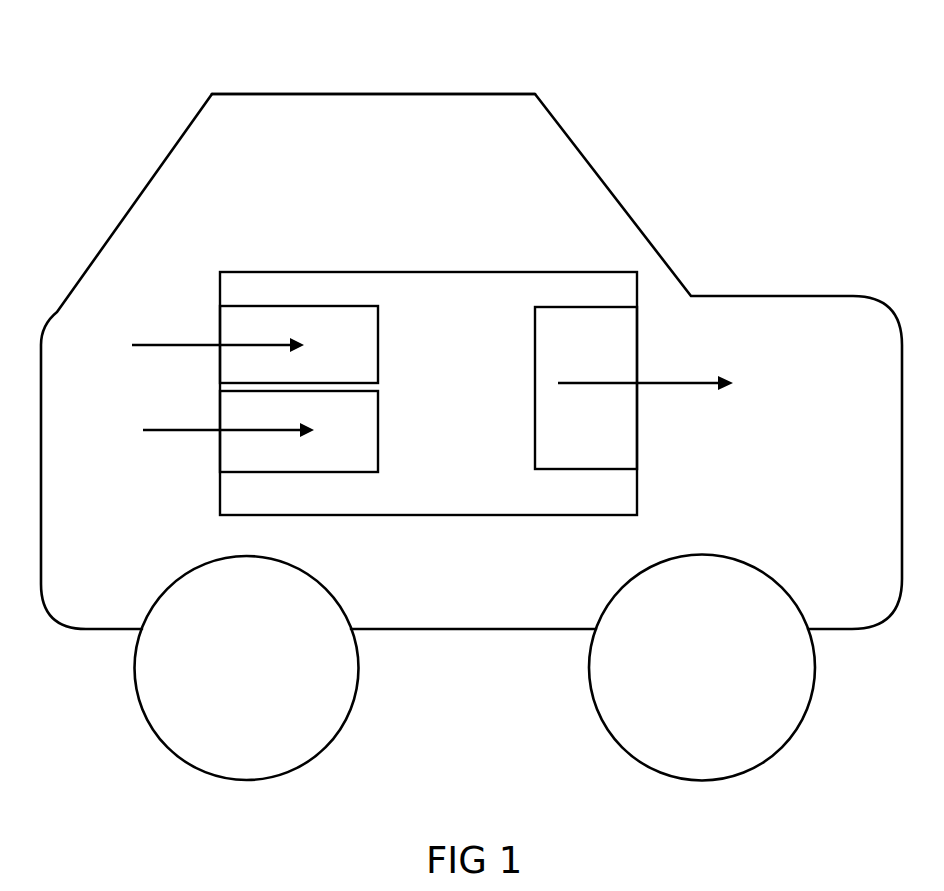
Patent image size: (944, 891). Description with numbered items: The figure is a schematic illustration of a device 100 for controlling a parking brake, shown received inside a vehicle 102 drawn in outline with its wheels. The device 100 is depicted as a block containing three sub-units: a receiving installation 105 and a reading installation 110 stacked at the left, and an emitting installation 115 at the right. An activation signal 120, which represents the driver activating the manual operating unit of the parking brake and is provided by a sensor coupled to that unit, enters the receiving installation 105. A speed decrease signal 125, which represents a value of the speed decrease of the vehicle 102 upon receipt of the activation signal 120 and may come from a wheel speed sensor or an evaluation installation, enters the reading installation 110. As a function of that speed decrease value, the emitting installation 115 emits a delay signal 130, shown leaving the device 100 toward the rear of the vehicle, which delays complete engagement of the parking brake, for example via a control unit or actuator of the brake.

The device 100 is at (443, 315).
The vehicle 102 is at (222, 122).
The receiving installation 105 is at (345, 330).
The reading installation 110 is at (335, 450).
The emitting installation 115 is at (604, 330).
The activation signal 120 is at (202, 345).
The speed decrease signal 125 is at (200, 433).
The delay signal 130 is at (655, 381).